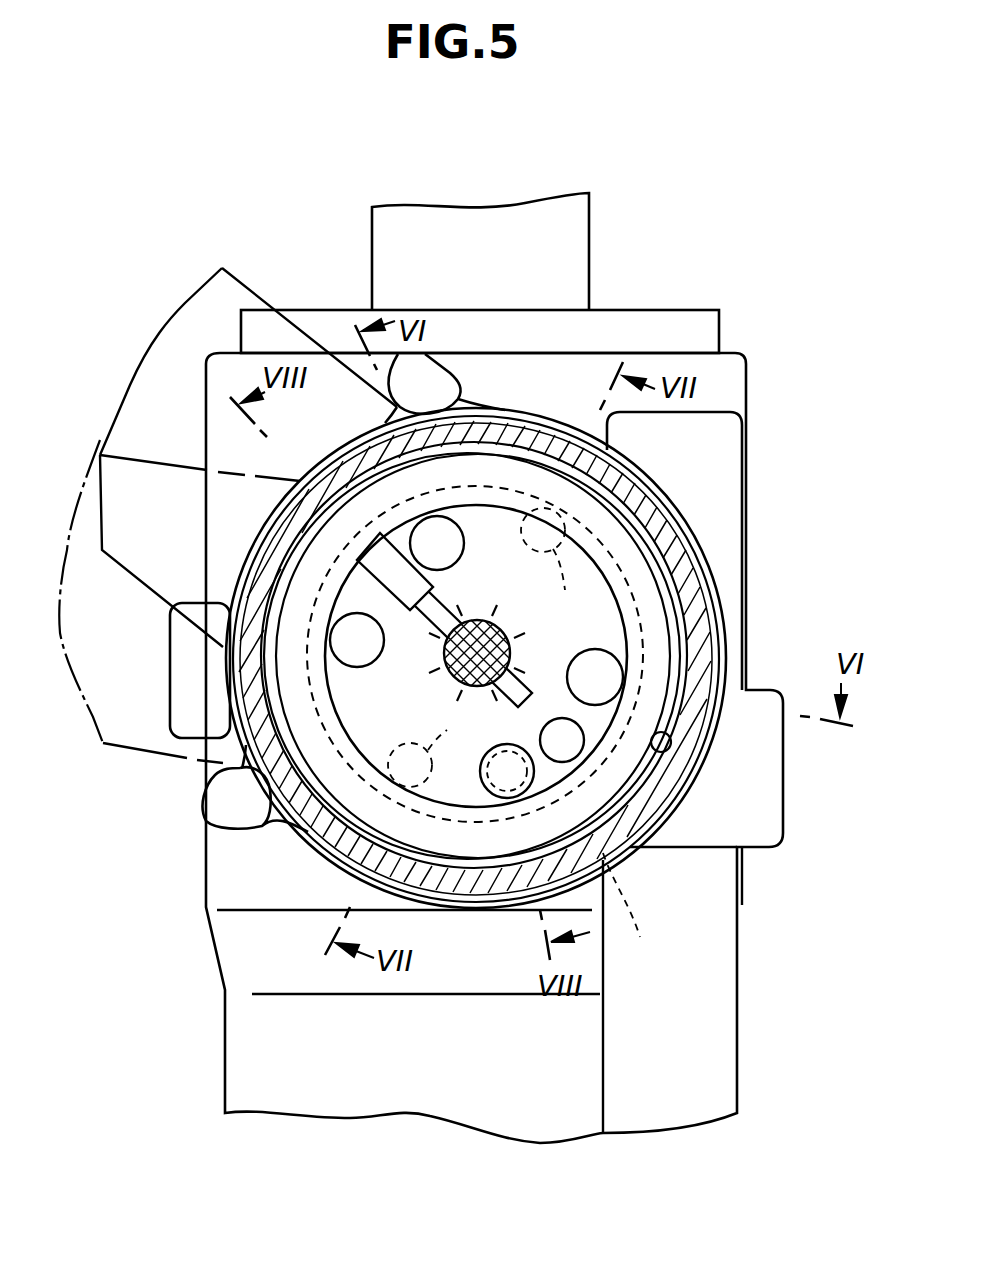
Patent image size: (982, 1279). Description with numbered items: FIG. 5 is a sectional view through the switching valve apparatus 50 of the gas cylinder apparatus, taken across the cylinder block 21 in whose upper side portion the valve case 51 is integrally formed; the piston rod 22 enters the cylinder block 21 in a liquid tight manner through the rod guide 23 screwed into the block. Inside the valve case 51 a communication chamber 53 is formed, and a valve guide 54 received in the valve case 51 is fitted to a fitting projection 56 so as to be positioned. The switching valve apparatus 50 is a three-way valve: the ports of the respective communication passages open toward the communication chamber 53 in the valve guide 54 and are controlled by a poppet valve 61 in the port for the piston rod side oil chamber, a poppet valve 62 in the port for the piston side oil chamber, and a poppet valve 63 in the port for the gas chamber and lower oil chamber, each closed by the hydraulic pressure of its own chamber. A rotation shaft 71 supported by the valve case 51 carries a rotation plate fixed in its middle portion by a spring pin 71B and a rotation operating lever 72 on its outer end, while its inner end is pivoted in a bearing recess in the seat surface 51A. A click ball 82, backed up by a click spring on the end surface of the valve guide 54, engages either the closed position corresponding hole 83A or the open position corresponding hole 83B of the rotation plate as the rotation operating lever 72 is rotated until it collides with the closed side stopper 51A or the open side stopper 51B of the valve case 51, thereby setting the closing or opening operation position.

The cylinder block 21 is at (246, 1058).
The piston rod 22 is at (575, 251).
The rod guide 23 is at (710, 331).
The switching valve apparatus 50 is at (672, 570).
The valve case 51 is at (667, 533).
The closed side stopper 51A is at (423, 362).
The open side stopper 51B is at (232, 818).
The communication chamber 53 is at (655, 746).
The valve guide 54 is at (657, 593).
The fitting projection 56 is at (485, 647).
The poppet valve 61 is at (352, 650).
The poppet valve 62 is at (608, 675).
The poppet valve 63 is at (420, 537).
The rotation shaft 71 is at (480, 625).
The spring pin 71B is at (417, 613).
The rotation operating lever 72 is at (257, 297).
The click ball 82 is at (493, 792).
The closed position corresponding hole 83A is at (635, 913).
The open position corresponding hole 83B is at (568, 752).